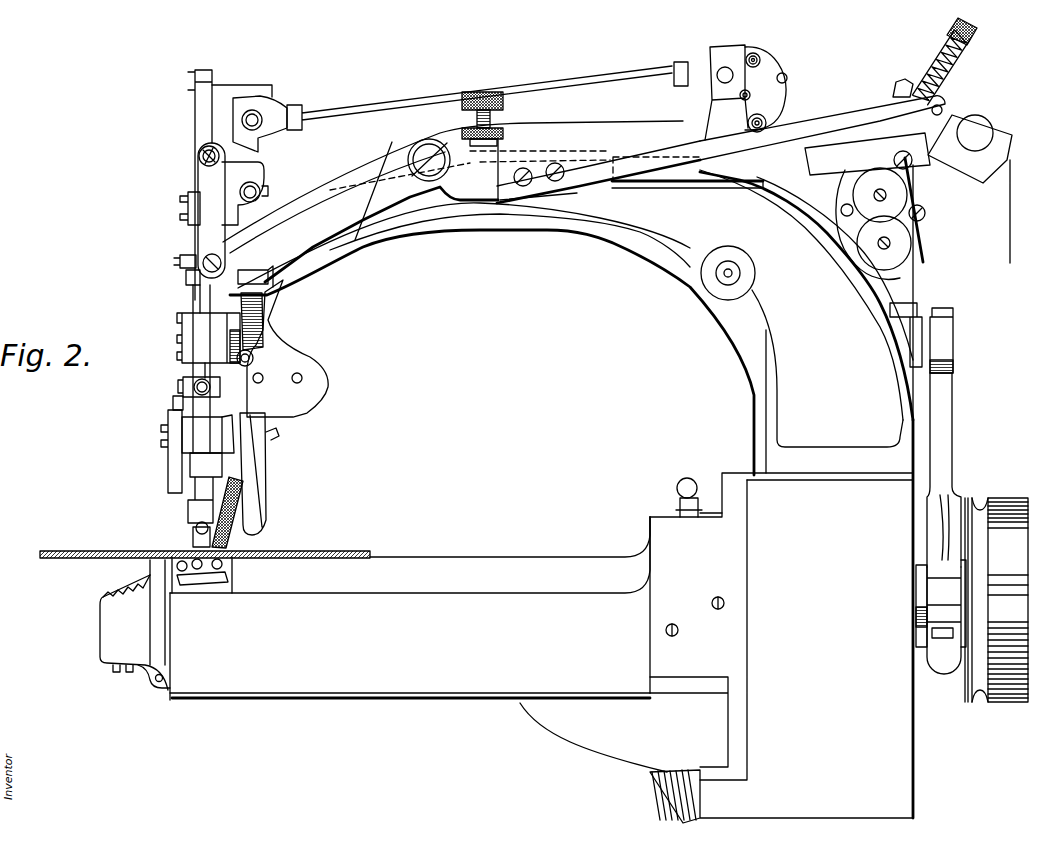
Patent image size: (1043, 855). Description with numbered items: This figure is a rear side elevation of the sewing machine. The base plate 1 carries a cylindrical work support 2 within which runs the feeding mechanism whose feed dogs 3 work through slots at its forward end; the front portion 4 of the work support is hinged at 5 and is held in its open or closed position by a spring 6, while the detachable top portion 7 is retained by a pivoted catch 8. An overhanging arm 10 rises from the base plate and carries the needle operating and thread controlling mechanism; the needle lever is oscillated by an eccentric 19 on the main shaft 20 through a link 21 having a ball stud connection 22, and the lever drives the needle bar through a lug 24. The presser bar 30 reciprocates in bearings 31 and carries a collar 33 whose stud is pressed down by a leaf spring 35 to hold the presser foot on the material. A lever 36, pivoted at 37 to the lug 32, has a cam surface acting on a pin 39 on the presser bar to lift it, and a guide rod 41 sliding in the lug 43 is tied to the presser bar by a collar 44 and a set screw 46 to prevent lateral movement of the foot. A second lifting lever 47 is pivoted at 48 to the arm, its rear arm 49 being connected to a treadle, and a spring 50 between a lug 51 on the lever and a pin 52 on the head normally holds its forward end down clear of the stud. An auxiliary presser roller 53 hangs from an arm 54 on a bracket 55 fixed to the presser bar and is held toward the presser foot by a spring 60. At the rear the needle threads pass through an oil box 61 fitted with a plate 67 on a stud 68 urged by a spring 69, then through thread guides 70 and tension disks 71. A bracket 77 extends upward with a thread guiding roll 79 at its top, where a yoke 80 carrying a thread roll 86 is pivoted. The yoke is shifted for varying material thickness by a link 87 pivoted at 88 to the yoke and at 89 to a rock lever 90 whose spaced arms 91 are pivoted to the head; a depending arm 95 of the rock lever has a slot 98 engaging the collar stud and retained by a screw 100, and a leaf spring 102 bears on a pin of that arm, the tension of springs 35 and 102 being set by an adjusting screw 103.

The base plate 1 is at (716, 494).
The cylindrical work support 2 is at (400, 608).
The feed dogs 3 is at (231, 560).
The front portion of work support 4 is at (134, 632).
The hinge 5 is at (159, 683).
The spring 6 is at (143, 670).
The top portion of work support 7 is at (537, 559).
The pivoted catch 8 is at (681, 482).
The overhanging arm 10 is at (488, 230).
The eccentric 19 is at (943, 670).
The main shaft 20 is at (915, 612).
The link 21 is at (953, 410).
The ball stud connection 22 is at (955, 335).
The lug 24 is at (162, 556).
The presser bar 30 is at (200, 370).
The bearings 31 is at (190, 222).
The lug 32 is at (187, 443).
The collar 33 is at (180, 262).
The leaf spring 35 is at (252, 267).
The lever 36 is at (170, 423).
The pivot 37 is at (167, 443).
The pin 39 is at (187, 400).
The guide rod 41 is at (214, 407).
The lug 43 is at (193, 342).
The collar 44 is at (183, 387).
The set screw 46 is at (199, 155).
The lever 47 is at (313, 232).
The pivot 48 is at (492, 169).
The arm 49 is at (690, 124).
The spring 50 is at (268, 313).
The lug 51 is at (265, 271).
The pin 52 is at (254, 361).
The auxiliary presser roller 53 is at (232, 543).
The arm 54 is at (262, 472).
The bracket 55 is at (329, 380).
The spring 60 is at (282, 433).
The oil box 61 is at (1000, 139).
The plate 67 is at (905, 83).
The stud 68 is at (952, 80).
The spring 69 is at (962, 56).
The thread guides 70 is at (913, 163).
The tension disks 71 is at (877, 240).
The bracket 77 is at (749, 126).
The thread guiding roll 79 is at (762, 98).
The yoke 80 is at (778, 72).
The thread roll 86 is at (760, 57).
The link 87 is at (588, 84).
The pivot 88 is at (720, 66).
The pivot 89 is at (260, 116).
The rock lever 90 is at (252, 158).
The spaced arms 91 is at (262, 182).
The depending arm 95 is at (188, 210).
The slot 98 is at (206, 266).
The screw 100 is at (186, 272).
The leaf spring 102 is at (272, 268).
The adjusting screw 103 is at (482, 102).